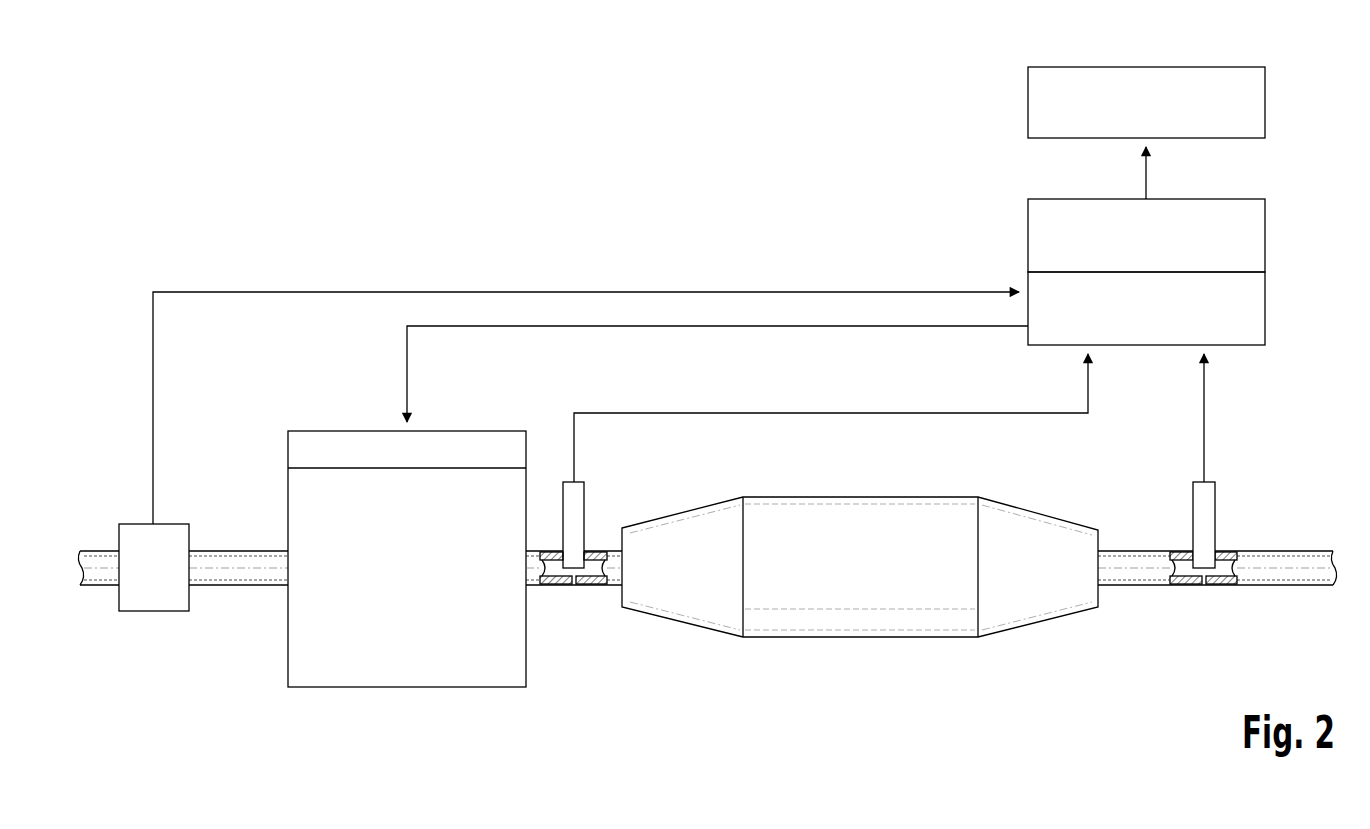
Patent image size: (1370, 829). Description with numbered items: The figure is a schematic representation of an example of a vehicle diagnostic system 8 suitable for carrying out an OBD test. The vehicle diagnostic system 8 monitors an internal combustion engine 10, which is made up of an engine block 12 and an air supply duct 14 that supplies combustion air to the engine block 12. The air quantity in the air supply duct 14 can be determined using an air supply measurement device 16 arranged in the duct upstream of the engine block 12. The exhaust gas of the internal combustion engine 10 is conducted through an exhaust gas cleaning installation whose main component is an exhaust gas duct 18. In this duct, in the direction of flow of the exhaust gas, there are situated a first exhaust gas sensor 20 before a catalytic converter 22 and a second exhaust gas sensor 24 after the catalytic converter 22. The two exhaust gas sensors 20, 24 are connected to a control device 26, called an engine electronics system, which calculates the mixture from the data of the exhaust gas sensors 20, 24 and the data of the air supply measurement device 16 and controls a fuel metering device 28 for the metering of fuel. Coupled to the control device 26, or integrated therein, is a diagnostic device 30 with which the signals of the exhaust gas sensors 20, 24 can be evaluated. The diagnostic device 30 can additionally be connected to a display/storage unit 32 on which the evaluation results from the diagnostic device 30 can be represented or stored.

The vehicle diagnostic system 8 is at (1290, 170).
The internal combustion engine 10 is at (1285, 498).
The engine block 12 is at (407, 558).
The air supply duct 14 is at (103, 574).
The air supply measurement device 16 is at (152, 612).
The exhaust gas duct 18 is at (614, 550).
The first exhaust gas sensor 20 is at (575, 584).
The catalytic converter 22 is at (860, 638).
The second exhaust gas sensor 24 is at (1205, 585).
The control device 26 is at (1266, 305).
The fuel metering device 28 is at (316, 448).
The diagnostic device 30 is at (1266, 235).
The display/storage unit 32 is at (1266, 100).